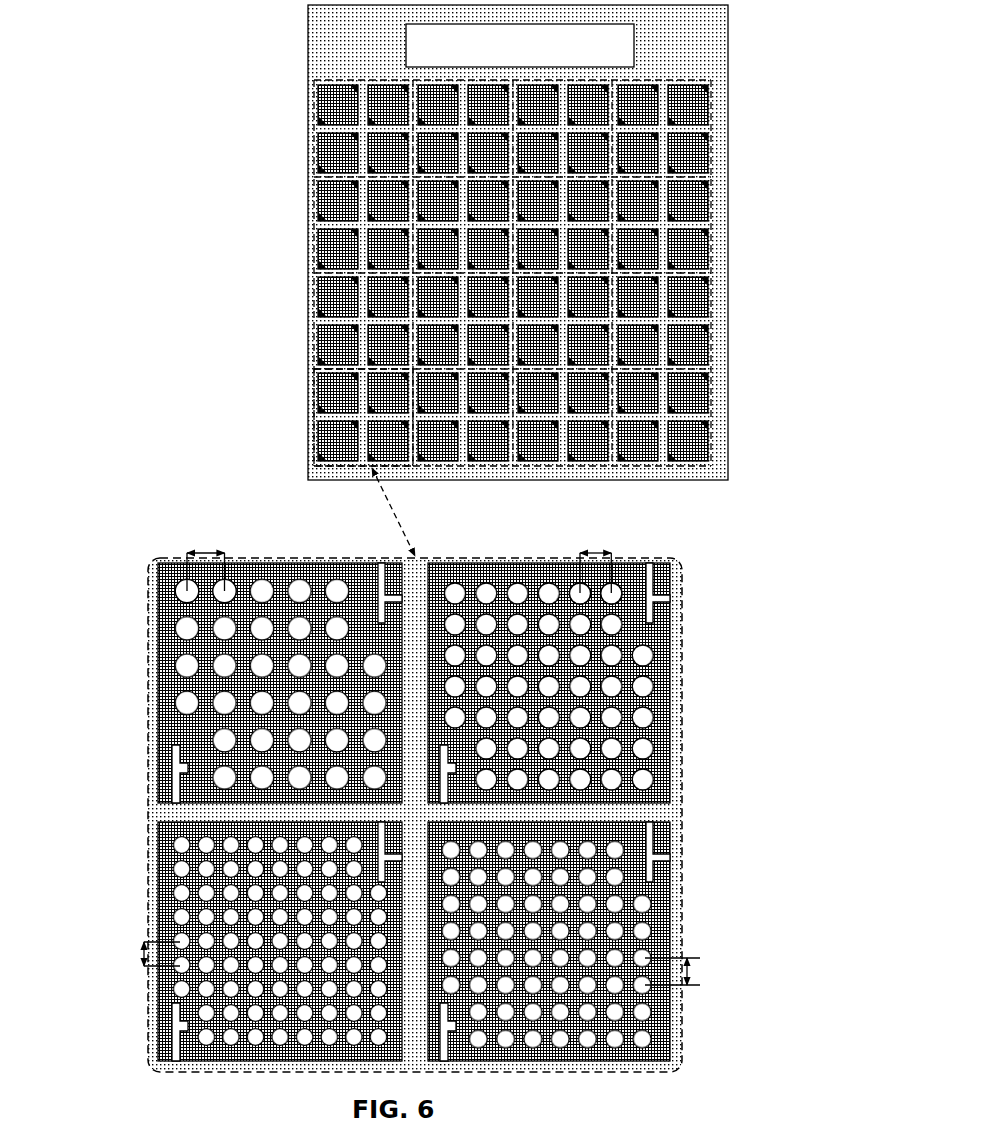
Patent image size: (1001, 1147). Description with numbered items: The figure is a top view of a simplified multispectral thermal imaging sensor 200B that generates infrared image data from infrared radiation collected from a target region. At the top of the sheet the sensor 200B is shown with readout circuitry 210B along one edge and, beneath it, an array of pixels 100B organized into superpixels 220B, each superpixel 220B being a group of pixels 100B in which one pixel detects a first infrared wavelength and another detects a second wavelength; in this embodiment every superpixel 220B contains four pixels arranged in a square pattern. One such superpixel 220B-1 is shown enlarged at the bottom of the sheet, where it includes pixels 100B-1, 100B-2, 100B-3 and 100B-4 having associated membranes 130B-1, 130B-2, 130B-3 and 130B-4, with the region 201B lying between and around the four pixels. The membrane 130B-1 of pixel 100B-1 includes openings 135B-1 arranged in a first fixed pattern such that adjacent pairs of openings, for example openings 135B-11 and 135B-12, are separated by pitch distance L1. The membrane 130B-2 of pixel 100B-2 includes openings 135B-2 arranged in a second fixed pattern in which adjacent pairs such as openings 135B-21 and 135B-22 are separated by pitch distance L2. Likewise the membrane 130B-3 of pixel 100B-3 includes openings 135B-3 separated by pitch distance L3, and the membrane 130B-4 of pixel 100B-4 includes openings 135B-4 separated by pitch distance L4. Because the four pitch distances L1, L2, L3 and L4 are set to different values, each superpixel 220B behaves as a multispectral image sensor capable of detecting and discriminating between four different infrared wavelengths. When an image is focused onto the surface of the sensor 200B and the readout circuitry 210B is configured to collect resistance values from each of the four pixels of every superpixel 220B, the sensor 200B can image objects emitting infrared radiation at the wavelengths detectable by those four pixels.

The multispectral thermal imaging sensor 200B is at (268, 62).
The readout circuitry 210B is at (520, 45).
The superpixel 220B is at (413, 78).
The superpixel 220B-1 is at (407, 719).
The pixels 100B is at (308, 290).
The pixel 100B-1 is at (220, 658).
The pixel 100B-2 is at (608, 658).
The pixel 100B-3 is at (608, 940).
The pixel 100B-4 is at (213, 940).
The membrane 130B-1 is at (157, 643).
The membrane 130B-2 is at (670, 665).
The membrane 130B-3 is at (670, 898).
The membrane 130B-4 is at (162, 903).
The openings 135B-1 is at (186, 702).
The openings 135B-2 is at (645, 715).
The openings 135B-3 is at (645, 985).
The openings 135B-4 is at (182, 942).
The opening 135B-11 is at (184, 580).
The opening 135B-12 is at (228, 578).
The opening 135B-21 is at (578, 582).
The opening 135B-22 is at (616, 582).
The substrate / gap region between pixels 201B is at (148, 752).
The pitch distance L1 is at (206, 550).
The pitch distance L2 is at (596, 550).
The pitch distance L3 is at (690, 972).
The pitch distance L4 is at (140, 954).